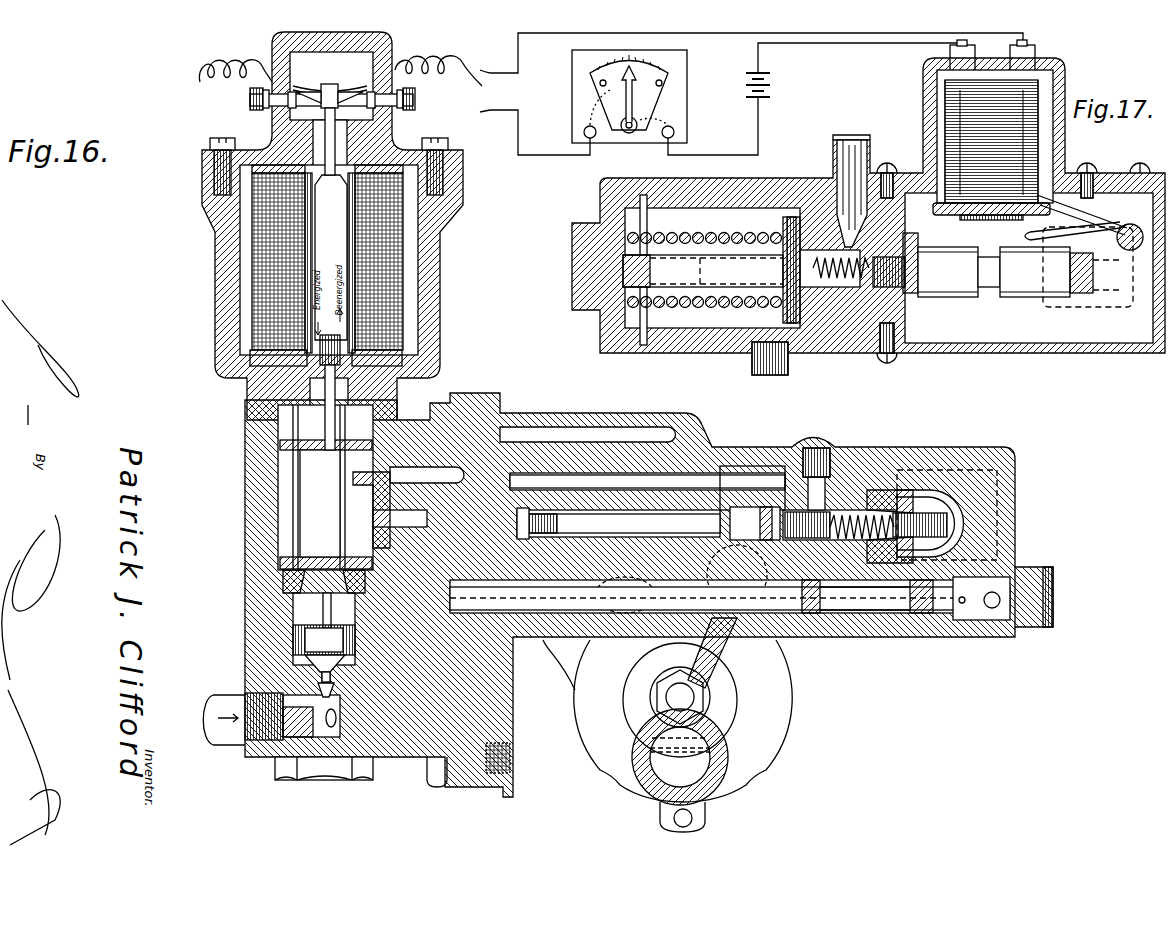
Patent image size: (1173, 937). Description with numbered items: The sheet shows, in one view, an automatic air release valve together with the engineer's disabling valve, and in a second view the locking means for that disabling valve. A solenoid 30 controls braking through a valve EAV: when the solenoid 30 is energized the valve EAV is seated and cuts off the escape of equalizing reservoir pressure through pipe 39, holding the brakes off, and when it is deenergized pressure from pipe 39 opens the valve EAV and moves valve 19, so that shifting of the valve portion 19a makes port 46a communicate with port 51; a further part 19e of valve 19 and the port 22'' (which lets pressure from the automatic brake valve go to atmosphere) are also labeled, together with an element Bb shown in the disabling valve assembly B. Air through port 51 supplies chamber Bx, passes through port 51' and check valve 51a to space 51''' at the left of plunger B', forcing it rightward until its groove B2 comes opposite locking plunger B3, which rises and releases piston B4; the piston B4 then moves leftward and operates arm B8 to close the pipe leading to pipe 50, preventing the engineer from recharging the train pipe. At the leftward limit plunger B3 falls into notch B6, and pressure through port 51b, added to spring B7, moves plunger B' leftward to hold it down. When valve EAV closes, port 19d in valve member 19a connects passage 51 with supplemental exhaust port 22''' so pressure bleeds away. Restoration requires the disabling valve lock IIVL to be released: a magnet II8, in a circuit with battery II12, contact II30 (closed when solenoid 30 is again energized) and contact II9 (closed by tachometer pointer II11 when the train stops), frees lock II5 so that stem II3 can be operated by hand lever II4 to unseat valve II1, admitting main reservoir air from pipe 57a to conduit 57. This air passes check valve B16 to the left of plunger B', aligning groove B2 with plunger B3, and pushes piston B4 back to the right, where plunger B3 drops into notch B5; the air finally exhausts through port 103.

In FIG. 16, the contact II30 is at (290, 83).
In FIG. 17, the contact II30 is at (512, 75).
In FIG. 16, the solenoid 30 is at (262, 268).
In FIG. 16, the valve stem 19e is at (345, 472).
In FIG. 16, the valve portion 19a is at (347, 500).
In FIG. 16, the port 46a is at (400, 515).
In FIG. 16, the port 19d is at (345, 527).
In FIG. 16, the supplemental exhaust port 22''' is at (278, 562).
In FIG. 16, the port 22'' is at (276, 599).
In FIG. 16, the valve 19 is at (340, 632).
In FIG. 16, the valve EAV is at (303, 662).
In FIG. 16, the pipe 39 is at (245, 693).
In FIG. 16, the check valve B16 is at (542, 503).
In FIG. 16, the conduit 57 is at (603, 430).
In FIG. 16, the port 51 is at (743, 463).
In FIG. 16, the space 51''' is at (746, 469).
In FIG. 16, the eccentric Bb is at (745, 455).
In FIG. 16, the valve body B is at (649, 595).
In FIG. 16, the groove B2 is at (775, 495).
In FIG. 16, the check valve 51a is at (755, 523).
In FIG. 16, the spring B7 is at (810, 517).
In FIG. 16, the plunger B' is at (900, 498).
In FIG. 16, the port 51b is at (947, 516).
In FIG. 16, the notch B5 is at (802, 588).
In FIG. 16, the locking plunger B3 is at (865, 595).
In FIG. 16, the notch B6 is at (905, 596).
In FIG. 16, the piston B4 is at (872, 613).
In FIG. 16, the port 51' is at (957, 630).
In FIG. 16, the chamber Bx is at (985, 637).
In FIG. 16, the arm B8 is at (722, 655).
In FIG. 16, the port 103 is at (548, 637).
In FIG. 16, the pipe 50 is at (707, 725).
In FIG. 17, the contact II9 is at (607, 91).
In FIG. 17, the tachometer pointer II11 is at (633, 108).
In FIG. 17, the battery II12 is at (772, 82).
In FIG. 17, the valve II1 is at (793, 223).
In FIG. 17, the disabling valve lock IIVL is at (853, 143).
In FIG. 17, the pipe 57a is at (868, 160).
In FIG. 17, the magnet II8 is at (1027, 148).
In FIG. 17, the lock II5 is at (1065, 215).
In FIG. 17, the stem II3 is at (962, 283).
In FIG. 17, the hand lever II4 is at (1093, 280).